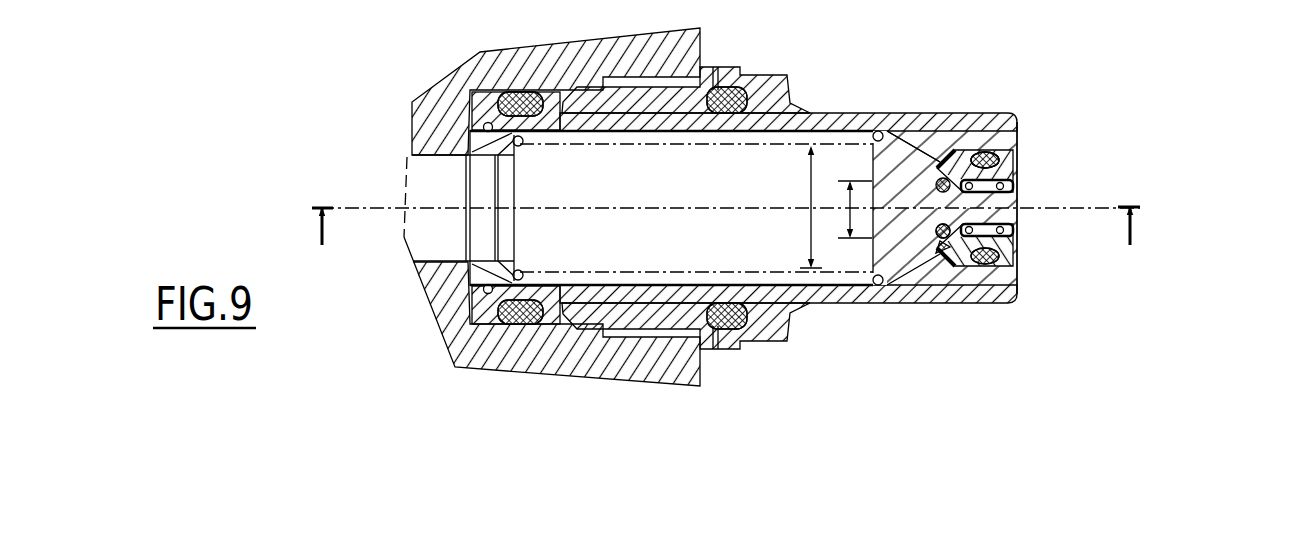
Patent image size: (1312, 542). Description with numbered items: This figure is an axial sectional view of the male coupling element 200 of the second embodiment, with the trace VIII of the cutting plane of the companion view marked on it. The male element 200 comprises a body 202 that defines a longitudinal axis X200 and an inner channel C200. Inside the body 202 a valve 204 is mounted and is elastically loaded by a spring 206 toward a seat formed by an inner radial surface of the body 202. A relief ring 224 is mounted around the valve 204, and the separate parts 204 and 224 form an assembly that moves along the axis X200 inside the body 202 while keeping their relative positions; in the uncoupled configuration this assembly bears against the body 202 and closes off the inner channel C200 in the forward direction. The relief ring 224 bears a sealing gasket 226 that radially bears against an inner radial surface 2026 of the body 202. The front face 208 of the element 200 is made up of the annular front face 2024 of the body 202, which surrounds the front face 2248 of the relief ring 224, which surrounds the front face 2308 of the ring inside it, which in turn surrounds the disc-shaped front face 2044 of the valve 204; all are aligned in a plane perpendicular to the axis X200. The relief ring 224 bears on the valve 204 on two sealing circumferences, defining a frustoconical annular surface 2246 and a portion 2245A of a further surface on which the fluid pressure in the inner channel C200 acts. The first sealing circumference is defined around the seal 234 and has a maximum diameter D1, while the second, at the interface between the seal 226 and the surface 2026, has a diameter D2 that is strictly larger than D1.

The male coupling element 200 is at (838, 67).
The body 202 is at (835, 297).
The valve 204 is at (917, 258).
The spring 206 is at (695, 273).
The front face 208 is at (1219, 74).
The relief ring 224 is at (1020, 176).
The sealing gasket 226 is at (987, 150).
The seal 234 is at (960, 140).
The front face of the body 2024 is at (1032, 127).
The front face of the relief ring 2248 is at (1032, 154).
The front face of the ring 230 2308 is at (1032, 184).
The front face of the valve 2044 is at (1032, 201).
The inner radial surface of the body 2026 is at (1022, 251).
The frustoconical annular surface 2246 is at (956, 270).
The portion of surface 2245 2245A is at (918, 235).
The longitudinal axis X200 is at (362, 208).
The inner channel C200 is at (671, 208).
The maximum diameter of the first sealing circumference D1 is at (849, 209).
The diameter of the second sealing circumference D2 is at (802, 207).
The cutting plane VIII- VIII is at (723, 231).